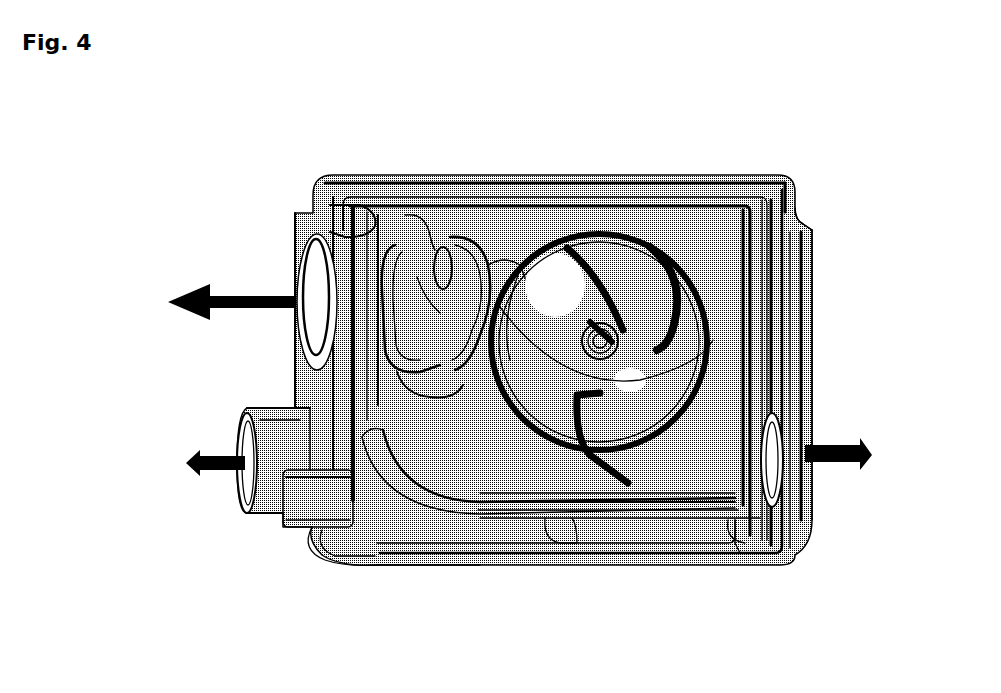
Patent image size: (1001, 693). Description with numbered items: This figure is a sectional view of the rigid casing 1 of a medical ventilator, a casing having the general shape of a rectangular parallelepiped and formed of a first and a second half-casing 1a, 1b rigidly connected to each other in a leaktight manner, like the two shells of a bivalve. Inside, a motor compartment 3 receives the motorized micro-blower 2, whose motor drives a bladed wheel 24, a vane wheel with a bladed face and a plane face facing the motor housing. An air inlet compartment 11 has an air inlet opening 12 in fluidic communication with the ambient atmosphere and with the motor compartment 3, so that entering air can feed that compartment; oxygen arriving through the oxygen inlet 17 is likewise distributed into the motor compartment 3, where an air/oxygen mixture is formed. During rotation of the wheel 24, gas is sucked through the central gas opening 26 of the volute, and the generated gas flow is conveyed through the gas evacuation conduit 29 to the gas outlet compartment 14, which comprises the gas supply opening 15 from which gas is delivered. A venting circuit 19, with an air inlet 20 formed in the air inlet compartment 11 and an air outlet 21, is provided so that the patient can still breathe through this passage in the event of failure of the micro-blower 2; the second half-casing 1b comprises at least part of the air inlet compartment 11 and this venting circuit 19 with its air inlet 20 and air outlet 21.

The rigid casing 1 is at (608, 563).
The first half-casing 1a is at (293, 243).
The second half-casing 1b is at (393, 567).
The motorized micro-blower 2 is at (605, 240).
The motor compartment 3 is at (577, 223).
The air inlet compartment 11 is at (812, 370).
The air inlet opening 12 is at (812, 487).
The gas outlet compartment 14 is at (375, 245).
The gas supply opening 15 is at (293, 330).
The oxygen inlet 17 is at (237, 487).
The venting circuit 19 is at (467, 527).
The air inlet 20 is at (735, 563).
The air outlet 21 is at (273, 527).
The bladed wheel 24 is at (845, 294).
The central gas opening 26 is at (640, 378).
The gas evacuation conduit 29 is at (427, 210).